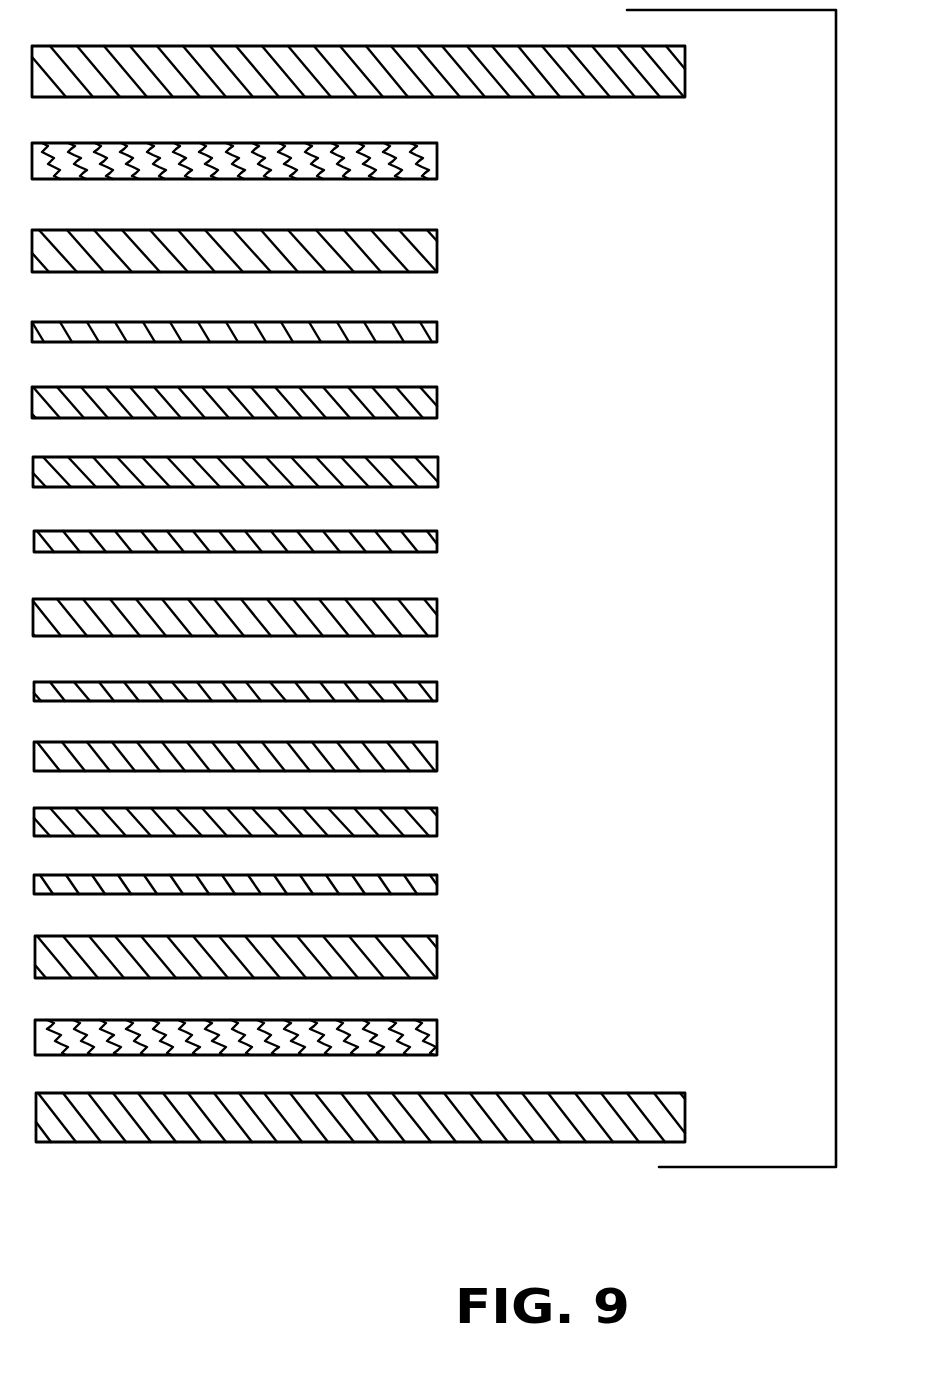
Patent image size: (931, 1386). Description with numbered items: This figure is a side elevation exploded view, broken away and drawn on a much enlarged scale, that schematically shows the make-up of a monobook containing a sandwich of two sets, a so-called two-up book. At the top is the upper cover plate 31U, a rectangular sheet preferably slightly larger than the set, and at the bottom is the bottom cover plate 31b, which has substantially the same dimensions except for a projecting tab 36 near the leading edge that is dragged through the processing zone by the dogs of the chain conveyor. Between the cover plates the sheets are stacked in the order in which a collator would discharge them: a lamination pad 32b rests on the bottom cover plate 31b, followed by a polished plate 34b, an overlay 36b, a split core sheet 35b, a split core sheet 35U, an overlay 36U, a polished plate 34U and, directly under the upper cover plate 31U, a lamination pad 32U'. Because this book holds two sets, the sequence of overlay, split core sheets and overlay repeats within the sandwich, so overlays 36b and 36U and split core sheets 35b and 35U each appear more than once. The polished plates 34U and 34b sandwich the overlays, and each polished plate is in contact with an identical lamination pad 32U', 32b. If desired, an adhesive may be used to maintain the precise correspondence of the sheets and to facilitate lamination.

The upper cover plate 31U is at (685, 72).
The lamination pad 32U' is at (301, 160).
The polished plate 34U is at (437, 251).
The overlay 36U is at (437, 332).
The split core sheet 35U is at (437, 403).
The split core sheet 35b is at (438, 472).
The overlay 36b is at (437, 541).
The polished plate 34b is at (437, 617).
The projecting tab 36 is at (437, 692).
The lamination pad 32b is at (437, 1037).
The bottom cover plate 31b is at (685, 1113).